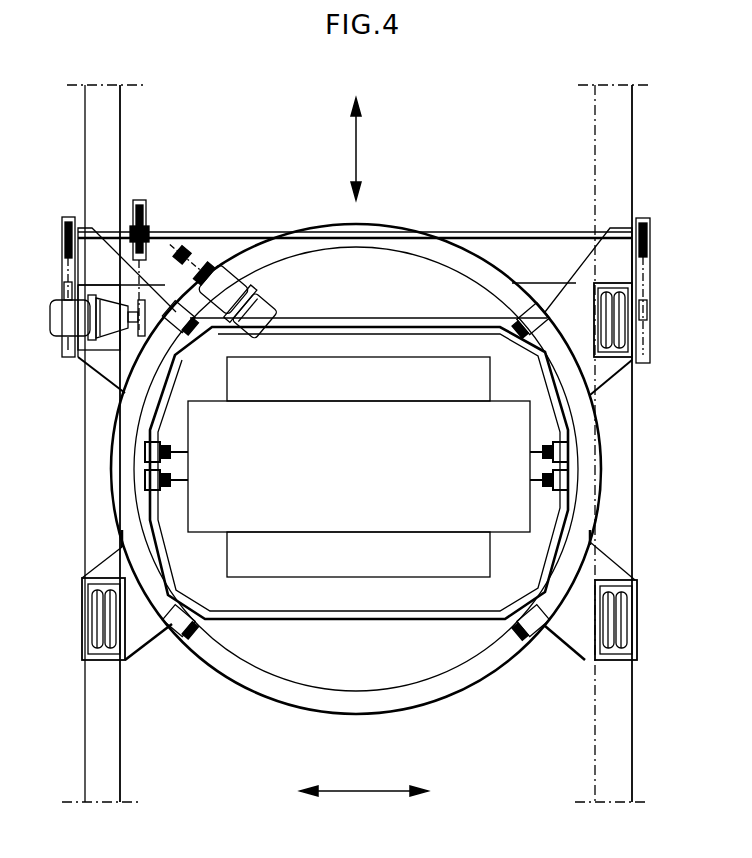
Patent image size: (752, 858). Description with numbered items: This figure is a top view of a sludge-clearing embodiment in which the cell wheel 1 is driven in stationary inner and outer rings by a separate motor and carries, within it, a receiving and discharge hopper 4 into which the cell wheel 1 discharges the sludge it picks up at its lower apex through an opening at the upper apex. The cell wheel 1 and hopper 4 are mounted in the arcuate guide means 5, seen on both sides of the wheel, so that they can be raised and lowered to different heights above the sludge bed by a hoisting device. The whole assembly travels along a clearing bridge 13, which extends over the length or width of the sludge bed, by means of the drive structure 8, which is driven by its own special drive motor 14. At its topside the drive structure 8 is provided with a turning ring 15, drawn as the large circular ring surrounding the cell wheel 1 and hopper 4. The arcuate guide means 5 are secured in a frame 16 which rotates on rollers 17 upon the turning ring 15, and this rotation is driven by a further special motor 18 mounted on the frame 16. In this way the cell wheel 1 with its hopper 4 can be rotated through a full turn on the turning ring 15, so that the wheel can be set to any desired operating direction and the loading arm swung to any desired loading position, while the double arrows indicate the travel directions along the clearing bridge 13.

The cell wheel 1 is at (356, 448).
The receiving and discharge hopper 4 is at (415, 370).
The arcuate guide means 5 is at (140, 452).
The drive structure 8 is at (578, 640).
The clearing bridge 13 is at (104, 749).
The drive motor 14 is at (60, 318).
The turning ring 15 is at (582, 525).
The frame 16 is at (156, 508).
The rollers 17 is at (182, 640).
The motor 18 is at (258, 300).